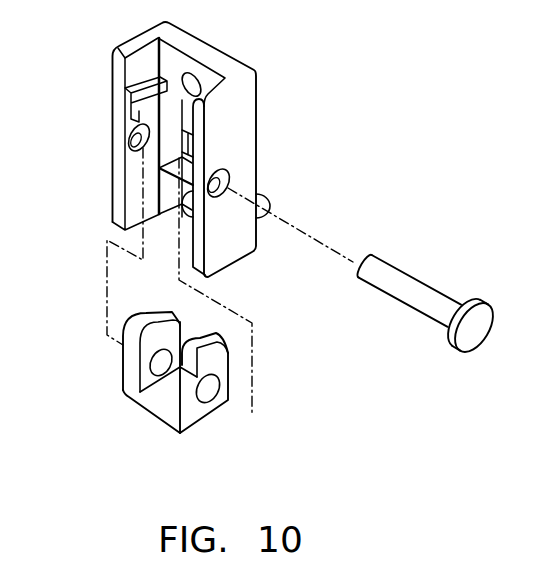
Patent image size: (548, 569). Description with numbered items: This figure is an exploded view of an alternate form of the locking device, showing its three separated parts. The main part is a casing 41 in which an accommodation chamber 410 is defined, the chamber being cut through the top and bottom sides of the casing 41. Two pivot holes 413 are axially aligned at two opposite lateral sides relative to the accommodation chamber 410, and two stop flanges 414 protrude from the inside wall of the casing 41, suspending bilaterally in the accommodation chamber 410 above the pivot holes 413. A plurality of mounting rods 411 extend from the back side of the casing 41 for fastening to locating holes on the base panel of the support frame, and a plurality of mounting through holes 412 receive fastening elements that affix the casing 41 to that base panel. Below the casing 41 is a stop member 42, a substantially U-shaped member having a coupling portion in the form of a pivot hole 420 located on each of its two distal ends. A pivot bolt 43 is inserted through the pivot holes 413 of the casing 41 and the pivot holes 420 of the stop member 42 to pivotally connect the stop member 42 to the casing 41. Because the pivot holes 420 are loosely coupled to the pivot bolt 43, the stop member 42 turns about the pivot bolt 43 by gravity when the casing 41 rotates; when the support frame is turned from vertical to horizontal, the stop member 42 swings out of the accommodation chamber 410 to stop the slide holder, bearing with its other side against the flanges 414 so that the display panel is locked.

The casing 41 is at (243, 122).
The accommodation chamber 410 is at (168, 183).
The mounting rods 411 is at (272, 203).
The mounting through holes 412 is at (192, 82).
The pivot holes 413 is at (138, 145).
The stop flanges 414 is at (133, 111).
The stop member 42 is at (162, 398).
The pivot hole 420 is at (153, 368).
The pivot bolt 43 is at (408, 293).